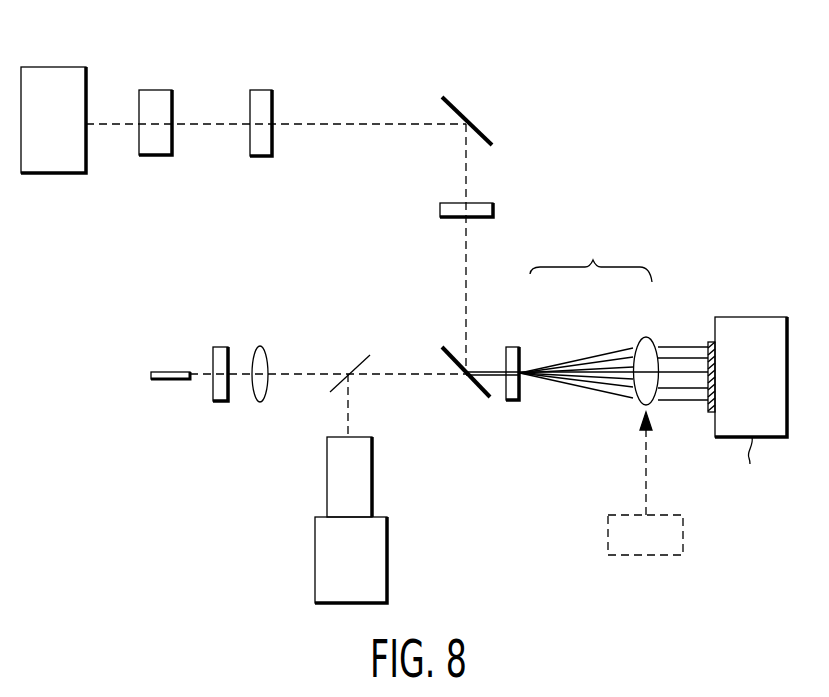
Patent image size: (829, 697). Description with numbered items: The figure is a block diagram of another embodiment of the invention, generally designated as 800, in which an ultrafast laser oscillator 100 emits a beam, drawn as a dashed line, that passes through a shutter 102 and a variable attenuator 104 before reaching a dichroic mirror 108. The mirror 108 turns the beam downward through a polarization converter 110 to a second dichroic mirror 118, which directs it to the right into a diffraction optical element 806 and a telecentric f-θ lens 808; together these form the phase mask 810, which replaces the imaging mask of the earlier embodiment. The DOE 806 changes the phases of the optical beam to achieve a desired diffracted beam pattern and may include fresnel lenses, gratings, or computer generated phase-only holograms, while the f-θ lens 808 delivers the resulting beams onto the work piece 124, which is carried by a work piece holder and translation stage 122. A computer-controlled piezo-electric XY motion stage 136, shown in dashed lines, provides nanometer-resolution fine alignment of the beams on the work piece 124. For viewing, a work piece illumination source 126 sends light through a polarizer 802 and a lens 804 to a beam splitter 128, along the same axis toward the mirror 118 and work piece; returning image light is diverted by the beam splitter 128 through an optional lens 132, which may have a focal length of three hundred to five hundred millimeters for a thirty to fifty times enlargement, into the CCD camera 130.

The ultrafast laser oscillator 100 is at (34, 66).
The shutter 102 is at (154, 157).
The variable attenuator 104 is at (262, 88).
The dichroic mirror 108 is at (447, 95).
The polarization converter 110 is at (440, 212).
The dichroic mirror 118 is at (480, 393).
The work piece holder and translation stage 122 is at (752, 317).
The work piece 124 is at (712, 342).
The work piece illumination source 126 is at (157, 380).
The beam splitter 128 is at (364, 353).
The CCD camera 130 is at (387, 545).
The lens 132 is at (327, 480).
The computer controlled motion stage 136 is at (608, 530).
The embodiment of the invention 800 is at (708, 73).
The polarizer 802 is at (218, 347).
The lens 804 is at (258, 346).
The diffraction optical element (DOE) 806 is at (512, 347).
The telecentric f-θ lens 808 is at (643, 337).
The phase mask 810 is at (591, 261).